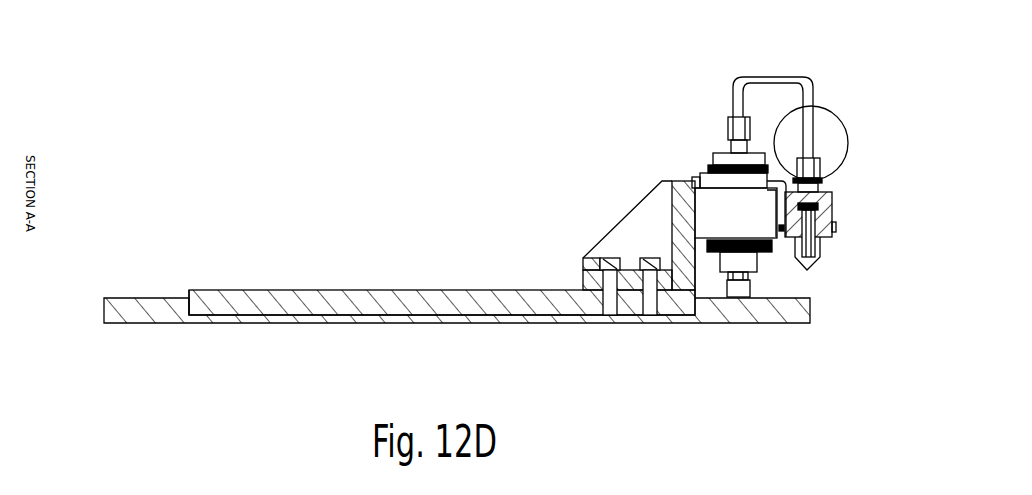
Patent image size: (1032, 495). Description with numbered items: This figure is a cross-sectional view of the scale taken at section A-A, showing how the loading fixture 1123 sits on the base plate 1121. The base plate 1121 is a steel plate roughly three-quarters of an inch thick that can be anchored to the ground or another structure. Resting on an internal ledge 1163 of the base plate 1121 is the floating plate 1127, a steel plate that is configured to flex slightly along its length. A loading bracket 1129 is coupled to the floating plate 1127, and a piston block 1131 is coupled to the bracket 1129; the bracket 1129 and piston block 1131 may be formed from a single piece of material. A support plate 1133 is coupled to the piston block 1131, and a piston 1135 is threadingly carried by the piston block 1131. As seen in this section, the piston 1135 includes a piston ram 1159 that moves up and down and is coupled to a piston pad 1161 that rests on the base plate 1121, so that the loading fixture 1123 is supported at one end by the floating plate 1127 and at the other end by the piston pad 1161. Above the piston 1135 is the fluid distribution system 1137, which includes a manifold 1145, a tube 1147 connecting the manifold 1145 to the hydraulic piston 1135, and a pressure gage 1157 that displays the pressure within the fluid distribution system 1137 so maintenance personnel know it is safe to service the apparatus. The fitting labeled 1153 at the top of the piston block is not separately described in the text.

The base plate 1121 is at (137, 325).
The loading fixture 1123 is at (597, 167).
The floating plate 1127 is at (270, 290).
The loading bracket 1129 is at (613, 227).
The piston block 1131 is at (699, 290).
The support plate 1133 is at (722, 200).
The piston 1135 is at (772, 245).
The fluid distribution system 1137 is at (826, 95).
The manifold 1145 is at (832, 203).
The tube 1147 is at (763, 77).
The flange 1153 is at (703, 177).
The pressure gage 1157 is at (848, 120).
The piston ram 1159 is at (825, 256).
The piston pad 1161 is at (730, 298).
The internal ledge 1163 is at (198, 298).